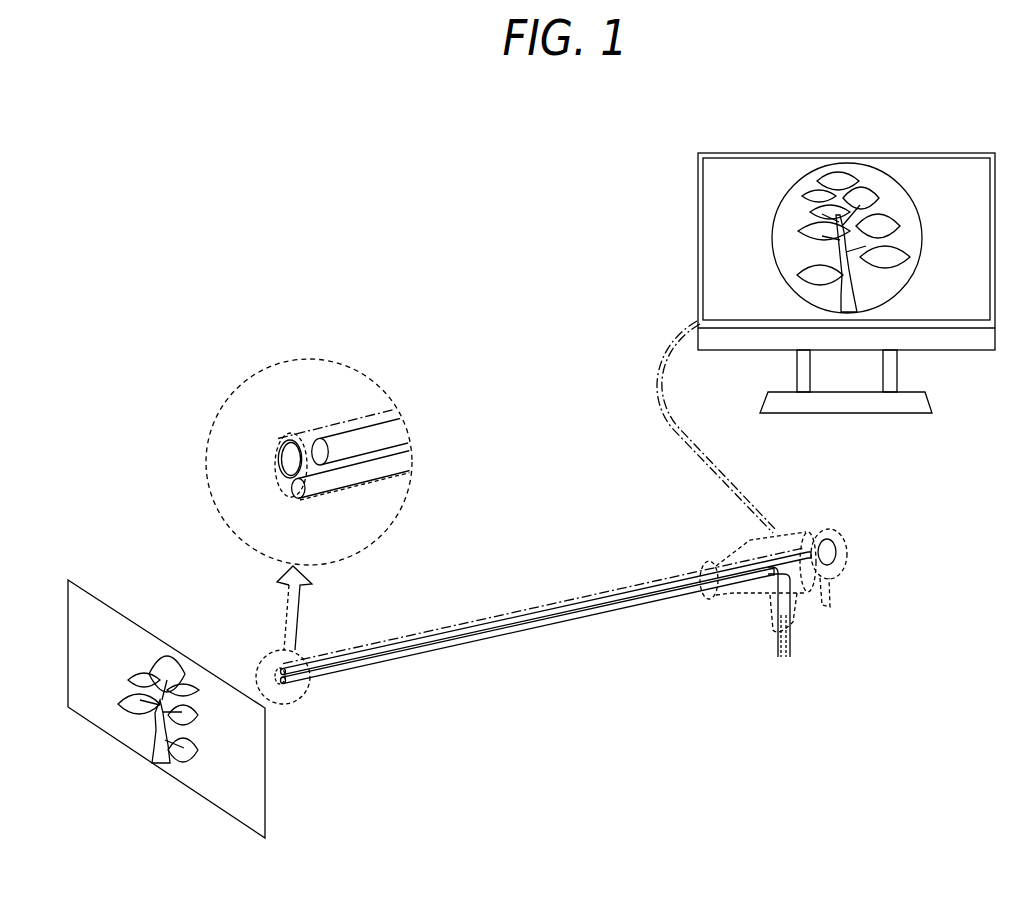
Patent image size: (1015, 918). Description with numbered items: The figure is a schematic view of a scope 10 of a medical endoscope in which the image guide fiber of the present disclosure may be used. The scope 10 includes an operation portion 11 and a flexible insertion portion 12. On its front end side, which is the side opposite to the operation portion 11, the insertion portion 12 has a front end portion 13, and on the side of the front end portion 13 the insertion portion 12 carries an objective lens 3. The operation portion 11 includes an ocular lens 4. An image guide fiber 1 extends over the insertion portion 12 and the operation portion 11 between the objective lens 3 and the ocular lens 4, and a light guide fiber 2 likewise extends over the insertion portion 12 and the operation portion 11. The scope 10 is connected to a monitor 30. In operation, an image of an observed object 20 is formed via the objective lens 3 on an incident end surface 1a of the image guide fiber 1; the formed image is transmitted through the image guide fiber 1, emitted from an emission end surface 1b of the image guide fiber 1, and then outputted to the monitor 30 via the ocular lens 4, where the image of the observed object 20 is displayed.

The image guide fiber 1 is at (600, 597).
The incident end surface 1a is at (318, 444).
The emission end surface 1b is at (814, 546).
The light guide fiber 2 is at (627, 608).
The objective lens 3 is at (282, 456).
The ocular lens 4 is at (848, 552).
The scope 10 is at (726, 675).
The operation portion 11 is at (828, 608).
The insertion portion 12 is at (490, 617).
The front end portion 13 is at (273, 483).
The observed object 20 is at (132, 620).
The monitor 30 is at (698, 238).